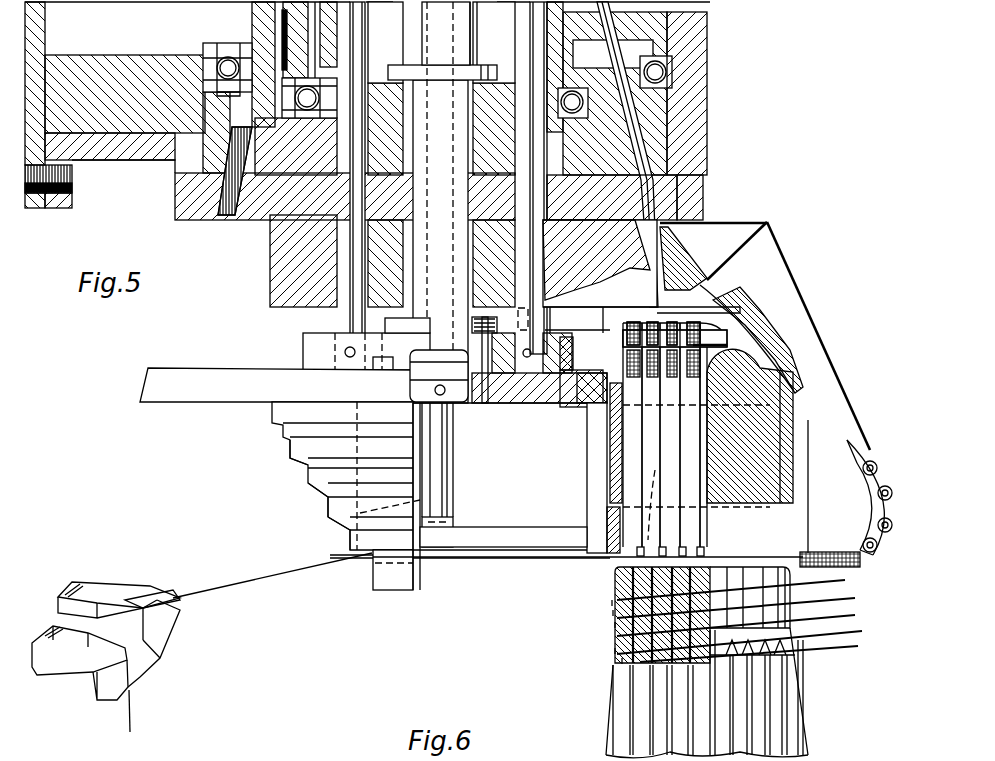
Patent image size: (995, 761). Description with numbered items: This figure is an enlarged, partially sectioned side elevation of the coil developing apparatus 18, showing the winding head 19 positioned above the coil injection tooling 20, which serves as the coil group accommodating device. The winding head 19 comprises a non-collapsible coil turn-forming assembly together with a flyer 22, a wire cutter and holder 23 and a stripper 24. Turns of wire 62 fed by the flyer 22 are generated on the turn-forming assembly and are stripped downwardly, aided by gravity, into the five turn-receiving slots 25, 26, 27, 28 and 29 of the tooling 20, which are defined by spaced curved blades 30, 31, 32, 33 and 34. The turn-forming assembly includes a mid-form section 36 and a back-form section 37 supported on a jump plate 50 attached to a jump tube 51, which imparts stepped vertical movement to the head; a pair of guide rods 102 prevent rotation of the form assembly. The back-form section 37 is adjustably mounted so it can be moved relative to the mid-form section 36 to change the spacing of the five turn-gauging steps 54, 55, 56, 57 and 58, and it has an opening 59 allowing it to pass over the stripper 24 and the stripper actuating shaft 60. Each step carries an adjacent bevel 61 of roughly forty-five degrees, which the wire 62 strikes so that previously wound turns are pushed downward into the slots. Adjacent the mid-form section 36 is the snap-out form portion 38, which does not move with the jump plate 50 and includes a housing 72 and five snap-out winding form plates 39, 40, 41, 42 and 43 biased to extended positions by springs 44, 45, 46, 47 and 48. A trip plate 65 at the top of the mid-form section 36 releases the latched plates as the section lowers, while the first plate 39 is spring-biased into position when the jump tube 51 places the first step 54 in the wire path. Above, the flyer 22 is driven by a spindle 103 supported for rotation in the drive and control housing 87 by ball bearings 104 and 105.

The coil developing apparatus 18 is at (770, 118).
The winding head 19 is at (510, 496).
The coil injection tooling 20 is at (694, 662).
The flyer 22 is at (882, 458).
The wire cutter and holder 23 is at (144, 590).
The stripper 24 is at (522, 528).
The turn-receiving slot 25 is at (612, 600).
The turn-receiving slot 26 is at (613, 610).
The turn-receiving slot 27 is at (615, 622).
The turn-receiving slot 28 is at (615, 648).
The turn-receiving slot 29 is at (622, 658).
The curved blade 30 is at (742, 586).
The curved blade 31 is at (747, 604).
The curved blade 32 is at (747, 621).
The curved blade 33 is at (751, 638).
The curved blade 34 is at (760, 650).
The mid-form section 36 is at (587, 495).
The back-form section 37 is at (395, 453).
The snap-out form portion 38 is at (760, 512).
The snap-out winding form plate 39 is at (628, 446).
The snap-out winding form plate 40 is at (650, 455).
The snap-out winding form plate 41 is at (670, 458).
The snap-out winding form plate 42 is at (690, 465).
The snap-out winding form plate 43 is at (702, 474).
The spring 44 is at (667, 323).
The spring 45 is at (683, 328).
The spring 46 is at (697, 322).
The spring 47 is at (707, 313).
The spring 48 is at (717, 307).
The jump plate 50 is at (200, 368).
The jump tube 51 is at (443, 165).
The turn-gauging step 54 is at (288, 449).
The turn-gauging step 55 is at (303, 479).
The turn-gauging step 56 is at (335, 508).
The turn-gauging step 57 is at (352, 541).
The turn-gauging step 58 is at (373, 583).
The opening 59 is at (420, 500).
The stripper actuating shaft 60 is at (448, 478).
The bevel 61 is at (370, 553).
The wire 62 is at (478, 560).
The trip plate 65 is at (570, 410).
The housing 72 is at (795, 487).
The drive and control housing 87 is at (708, 78).
The guide rod 102 is at (338, 250).
The spindle 103 is at (551, 36).
The ball bearing 104 is at (208, 48).
The ball bearing 105 is at (287, 118).